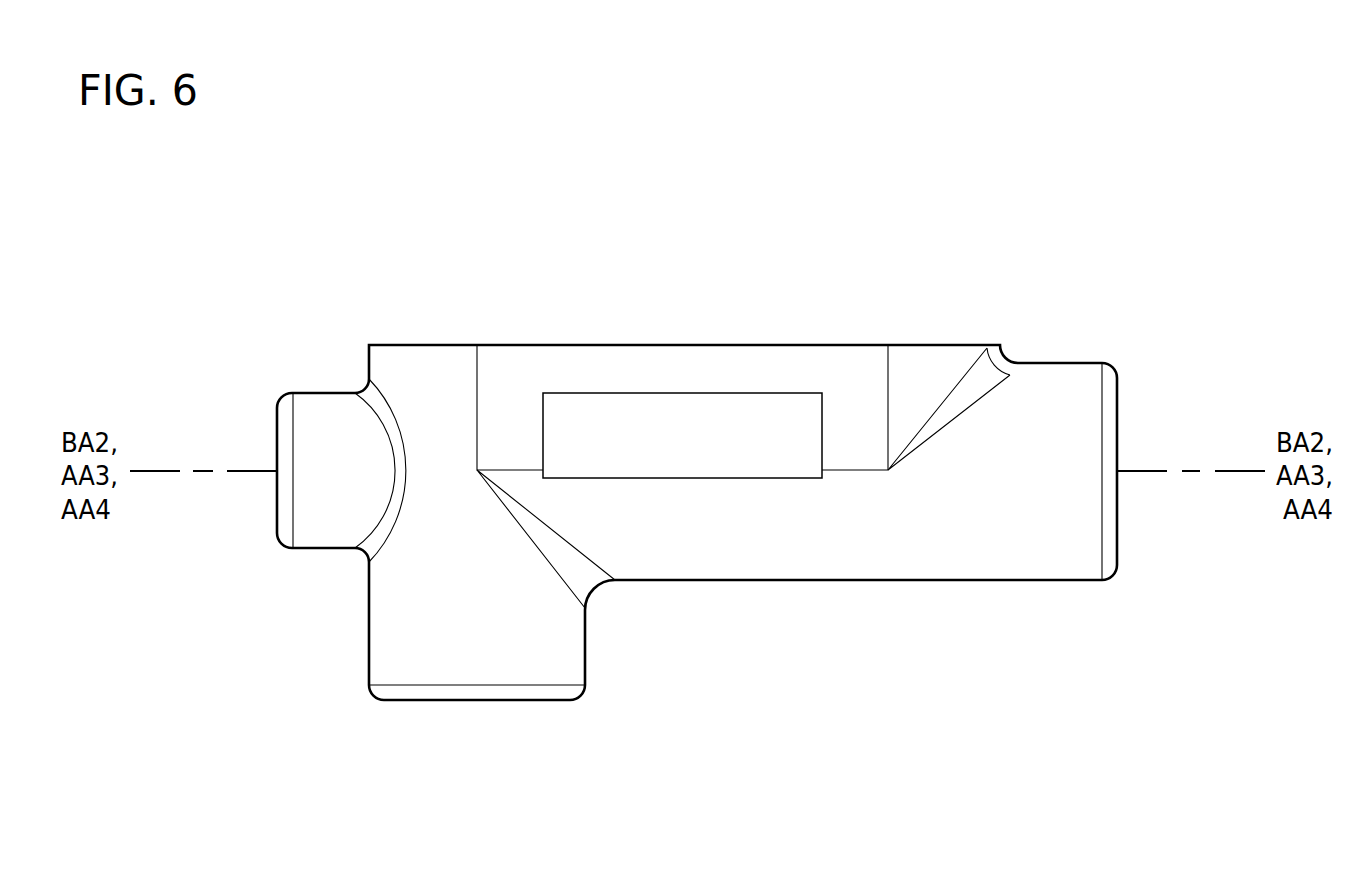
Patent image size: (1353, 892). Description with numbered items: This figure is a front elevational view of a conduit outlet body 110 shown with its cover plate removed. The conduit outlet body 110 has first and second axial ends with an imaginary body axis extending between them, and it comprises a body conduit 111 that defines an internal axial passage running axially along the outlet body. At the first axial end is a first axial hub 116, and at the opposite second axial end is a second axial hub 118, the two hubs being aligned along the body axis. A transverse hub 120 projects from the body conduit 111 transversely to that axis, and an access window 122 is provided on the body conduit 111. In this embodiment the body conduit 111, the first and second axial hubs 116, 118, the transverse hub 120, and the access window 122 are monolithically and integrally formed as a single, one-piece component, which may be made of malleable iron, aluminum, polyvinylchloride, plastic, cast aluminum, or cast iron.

The conduit outlet body 110 is at (1037, 193).
The body conduit 111 is at (767, 560).
The first axial hub 116 is at (273, 533).
The second axial hub 118 is at (1112, 575).
The transverse hub 120 is at (582, 694).
The access window 122 is at (985, 346).